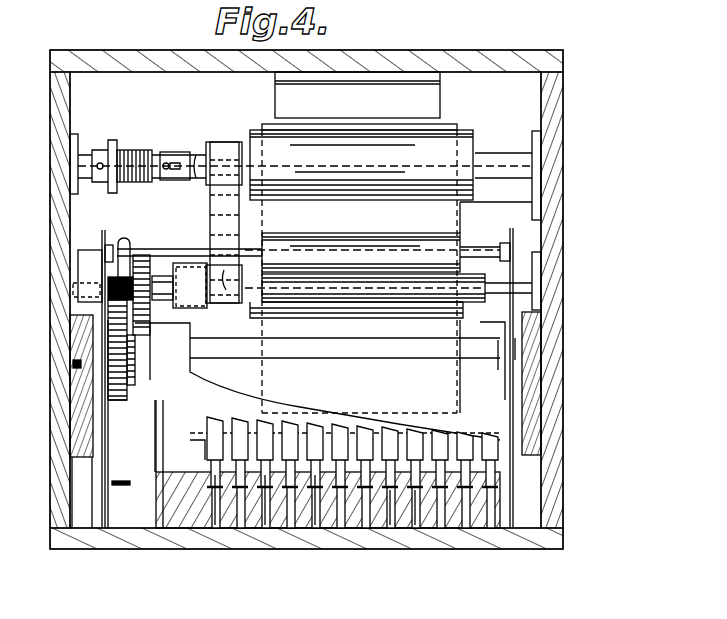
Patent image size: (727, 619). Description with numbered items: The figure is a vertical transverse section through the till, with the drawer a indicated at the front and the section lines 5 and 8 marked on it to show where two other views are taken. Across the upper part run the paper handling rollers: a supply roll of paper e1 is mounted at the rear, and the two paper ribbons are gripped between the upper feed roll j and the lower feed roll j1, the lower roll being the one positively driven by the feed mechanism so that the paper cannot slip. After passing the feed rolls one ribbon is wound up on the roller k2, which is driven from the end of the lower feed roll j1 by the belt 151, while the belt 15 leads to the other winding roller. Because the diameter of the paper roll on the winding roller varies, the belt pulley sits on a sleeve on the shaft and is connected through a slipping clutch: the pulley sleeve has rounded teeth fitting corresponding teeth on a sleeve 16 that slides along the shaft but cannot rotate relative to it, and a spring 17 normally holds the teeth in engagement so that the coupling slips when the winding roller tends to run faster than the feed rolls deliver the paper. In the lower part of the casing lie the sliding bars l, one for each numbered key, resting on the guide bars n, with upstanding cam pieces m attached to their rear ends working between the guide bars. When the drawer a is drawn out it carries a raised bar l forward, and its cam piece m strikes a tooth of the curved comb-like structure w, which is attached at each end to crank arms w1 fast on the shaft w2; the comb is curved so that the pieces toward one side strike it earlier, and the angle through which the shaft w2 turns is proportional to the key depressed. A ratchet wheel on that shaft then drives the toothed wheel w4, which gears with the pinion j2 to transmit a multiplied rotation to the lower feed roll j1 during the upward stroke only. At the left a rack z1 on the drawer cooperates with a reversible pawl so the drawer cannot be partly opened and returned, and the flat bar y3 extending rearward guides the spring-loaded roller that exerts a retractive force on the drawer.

The till drawer a is at (538, 412).
The section line 5— 5 is at (74, 580).
The section line 8— 8 is at (155, 598).
The supply roll of paper e1 is at (440, 126).
The winding-up roll k2 is at (468, 152).
The spring 17 is at (136, 151).
The sleeve 16 is at (176, 152).
The belt 151 is at (224, 222).
The belt 15 is at (190, 277).
The pinion j2 is at (127, 246).
The upper feed roll j is at (448, 248).
The lower feed roll j1 is at (385, 295).
The rack z1 is at (73, 364).
The shaft w2 is at (133, 375).
The crank arm w1 is at (317, 381).
The comb-like structure w is at (292, 444).
The cam piece m is at (196, 460).
The guide bar n is at (340, 495).
The sliding bar l is at (428, 500).
The toothed wheel w4 is at (125, 402).
The flat bar y3 is at (128, 480).